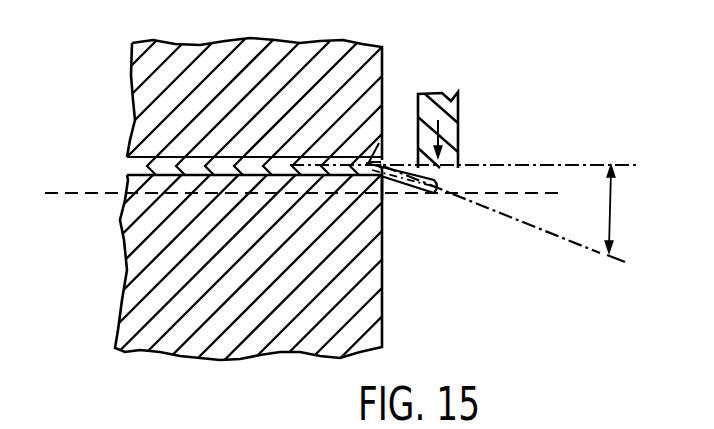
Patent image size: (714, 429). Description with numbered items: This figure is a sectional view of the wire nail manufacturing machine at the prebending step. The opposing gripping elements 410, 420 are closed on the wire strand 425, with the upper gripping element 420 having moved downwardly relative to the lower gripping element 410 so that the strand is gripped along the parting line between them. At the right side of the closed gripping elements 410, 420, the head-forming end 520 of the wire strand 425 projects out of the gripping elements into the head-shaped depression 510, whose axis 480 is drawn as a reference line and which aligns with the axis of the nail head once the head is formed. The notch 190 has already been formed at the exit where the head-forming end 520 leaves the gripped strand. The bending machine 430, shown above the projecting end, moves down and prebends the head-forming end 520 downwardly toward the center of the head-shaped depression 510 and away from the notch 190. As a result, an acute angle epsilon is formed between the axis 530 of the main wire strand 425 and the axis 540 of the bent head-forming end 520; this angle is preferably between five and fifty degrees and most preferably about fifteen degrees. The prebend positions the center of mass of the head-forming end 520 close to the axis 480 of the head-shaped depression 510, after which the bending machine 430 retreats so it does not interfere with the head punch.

The notch 190 is at (381, 140).
The gripping element 410 is at (140, 290).
The gripping element 420 is at (158, 85).
The wire strand 425 is at (148, 163).
The bending machine 430 is at (458, 125).
The axis of head-shaped depression 480 is at (90, 195).
The head-shaped depression 510 is at (390, 192).
The head-forming end 520 is at (422, 198).
The axis of main wire strand 530 is at (573, 166).
The axis of head-forming end 540 is at (603, 257).